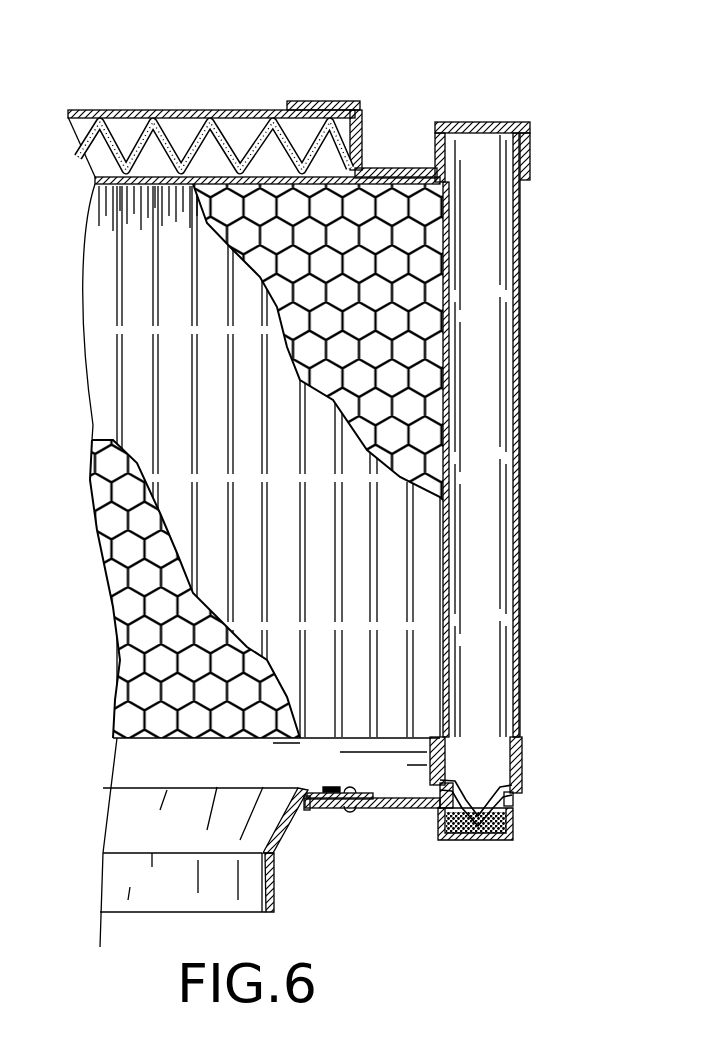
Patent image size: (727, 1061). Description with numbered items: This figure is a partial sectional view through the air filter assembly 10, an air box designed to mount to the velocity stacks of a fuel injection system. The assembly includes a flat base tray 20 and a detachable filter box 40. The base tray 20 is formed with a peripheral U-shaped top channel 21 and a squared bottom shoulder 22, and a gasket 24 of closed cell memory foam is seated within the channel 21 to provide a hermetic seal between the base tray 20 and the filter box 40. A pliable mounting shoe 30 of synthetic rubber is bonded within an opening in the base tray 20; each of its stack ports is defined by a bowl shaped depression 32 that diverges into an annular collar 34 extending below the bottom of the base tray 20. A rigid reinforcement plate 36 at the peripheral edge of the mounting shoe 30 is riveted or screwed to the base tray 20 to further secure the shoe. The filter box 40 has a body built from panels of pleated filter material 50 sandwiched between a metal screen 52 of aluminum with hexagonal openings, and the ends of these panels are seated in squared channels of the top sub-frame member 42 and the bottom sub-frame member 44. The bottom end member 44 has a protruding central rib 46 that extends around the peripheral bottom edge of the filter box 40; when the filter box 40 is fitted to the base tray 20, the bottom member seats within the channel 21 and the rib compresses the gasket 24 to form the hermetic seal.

The air filter assembly 10 is at (590, 105).
The base tray 20 is at (400, 810).
The U-shaped top channel 21 is at (452, 783).
The bottom shoulder 22 is at (470, 835).
The gasket 24 is at (512, 827).
The mounting shoe 30 is at (280, 875).
The bowl shaped depression 32 is at (132, 817).
The annular collar 34 is at (132, 887).
The reinforcement plate 36 is at (362, 793).
The filter box 40 is at (180, 105).
The top sub-frame member 42 is at (318, 102).
The bottom sub-frame member 44 is at (523, 757).
The central rib 46 is at (512, 797).
The pleated filter material 50 is at (83, 145).
The metal screen 52 is at (117, 110).